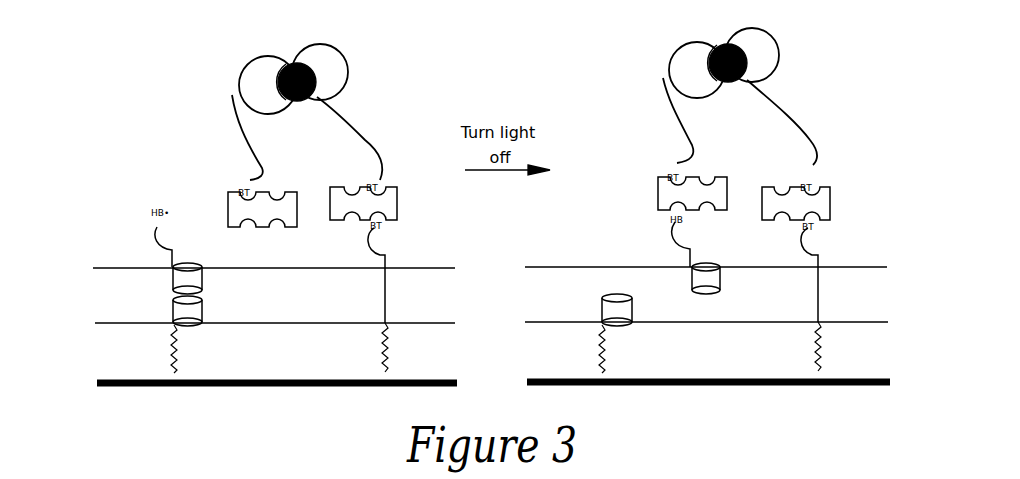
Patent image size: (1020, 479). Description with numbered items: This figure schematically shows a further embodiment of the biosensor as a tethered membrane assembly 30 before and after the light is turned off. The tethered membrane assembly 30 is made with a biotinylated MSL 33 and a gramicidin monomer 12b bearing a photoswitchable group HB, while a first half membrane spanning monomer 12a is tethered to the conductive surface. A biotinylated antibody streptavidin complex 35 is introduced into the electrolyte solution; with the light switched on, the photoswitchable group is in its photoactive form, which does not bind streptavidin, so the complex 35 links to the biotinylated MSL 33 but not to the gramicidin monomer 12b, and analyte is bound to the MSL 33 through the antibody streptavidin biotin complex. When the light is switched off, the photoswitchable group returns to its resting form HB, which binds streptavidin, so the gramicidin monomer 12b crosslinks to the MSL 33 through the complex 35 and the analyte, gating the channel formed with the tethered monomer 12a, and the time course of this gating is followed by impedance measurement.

The tethered membrane assembly 30 is at (105, 302).
The biotinylated antibody streptavidin complex 35 is at (343, 50).
The biotinylated MSL 33 is at (387, 288).
The second half membrane spanning monomer 12b is at (200, 267).
The first half membrane spanning monomer 12a is at (203, 297).